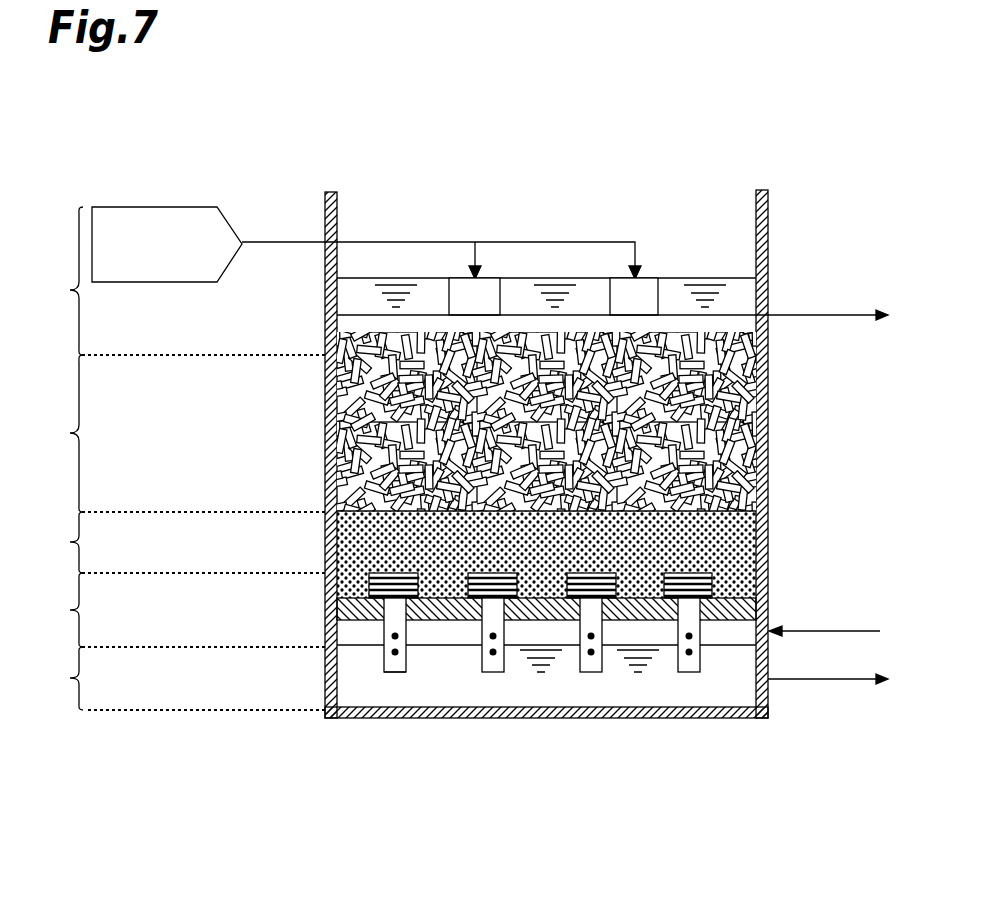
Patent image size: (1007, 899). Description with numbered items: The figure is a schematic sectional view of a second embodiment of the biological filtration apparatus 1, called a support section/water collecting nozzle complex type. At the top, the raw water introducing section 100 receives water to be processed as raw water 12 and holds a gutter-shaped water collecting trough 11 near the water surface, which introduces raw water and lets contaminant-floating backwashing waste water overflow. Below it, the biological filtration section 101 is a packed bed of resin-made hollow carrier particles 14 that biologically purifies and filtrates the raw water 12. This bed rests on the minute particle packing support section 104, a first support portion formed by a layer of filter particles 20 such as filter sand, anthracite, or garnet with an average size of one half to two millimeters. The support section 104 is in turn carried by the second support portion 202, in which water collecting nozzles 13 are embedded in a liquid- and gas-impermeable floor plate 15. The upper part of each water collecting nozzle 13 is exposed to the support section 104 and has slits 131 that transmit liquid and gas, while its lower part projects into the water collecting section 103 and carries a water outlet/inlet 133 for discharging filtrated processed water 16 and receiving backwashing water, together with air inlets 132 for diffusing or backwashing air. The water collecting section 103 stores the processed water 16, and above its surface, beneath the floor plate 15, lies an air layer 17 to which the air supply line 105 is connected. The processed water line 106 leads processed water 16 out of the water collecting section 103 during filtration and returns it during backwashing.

The biological filtration apparatus 1 is at (776, 424).
The water collecting trough 11 is at (449, 305).
The raw water 12 is at (340, 343).
The water collecting nozzle 13 is at (369, 573).
The slits 131 is at (369, 588).
The air inlets 132 is at (390, 637).
The water outlet/inlet 133 is at (396, 673).
The hollow carrier particles 14 is at (340, 424).
The floor plate 15 is at (337, 621).
The processed water 16 is at (555, 687).
The air layer 17 is at (447, 633).
The filter particles 20 is at (752, 532).
The raw water introducing section 100 is at (334, 281).
The biological filtration section 101 is at (178, 433).
The minute particle packing support section 104 is at (175, 542).
The second support portion 202 is at (177, 610).
The water collecting section 103 is at (176, 678).
The air supply line 105 is at (822, 630).
The processed water line 106 is at (822, 682).